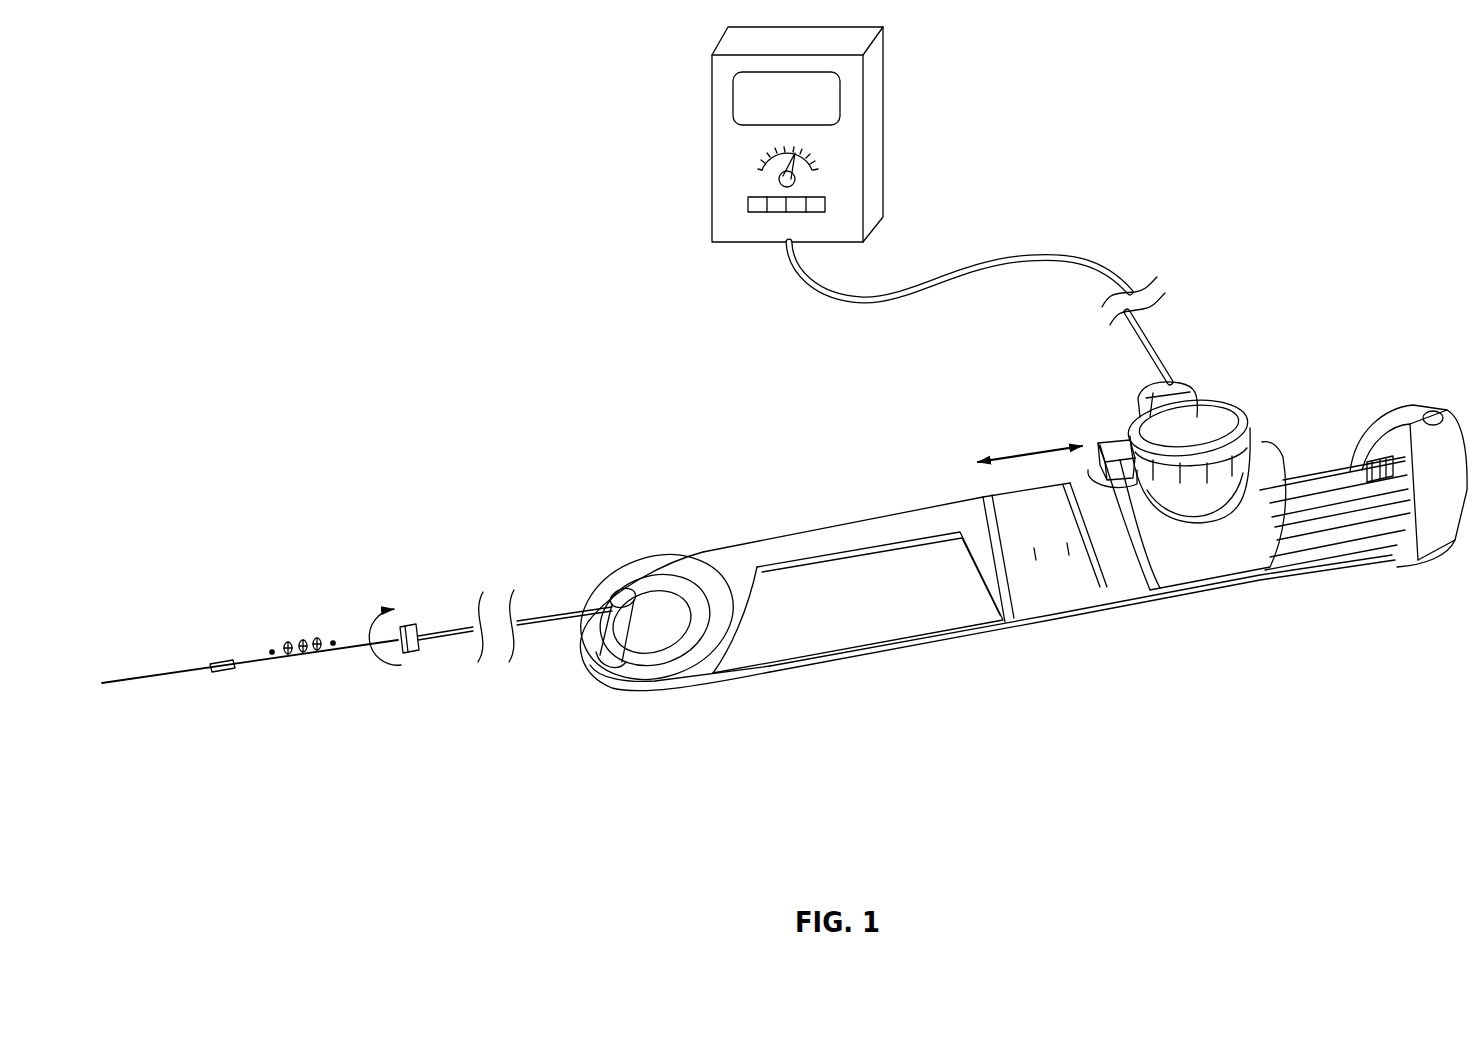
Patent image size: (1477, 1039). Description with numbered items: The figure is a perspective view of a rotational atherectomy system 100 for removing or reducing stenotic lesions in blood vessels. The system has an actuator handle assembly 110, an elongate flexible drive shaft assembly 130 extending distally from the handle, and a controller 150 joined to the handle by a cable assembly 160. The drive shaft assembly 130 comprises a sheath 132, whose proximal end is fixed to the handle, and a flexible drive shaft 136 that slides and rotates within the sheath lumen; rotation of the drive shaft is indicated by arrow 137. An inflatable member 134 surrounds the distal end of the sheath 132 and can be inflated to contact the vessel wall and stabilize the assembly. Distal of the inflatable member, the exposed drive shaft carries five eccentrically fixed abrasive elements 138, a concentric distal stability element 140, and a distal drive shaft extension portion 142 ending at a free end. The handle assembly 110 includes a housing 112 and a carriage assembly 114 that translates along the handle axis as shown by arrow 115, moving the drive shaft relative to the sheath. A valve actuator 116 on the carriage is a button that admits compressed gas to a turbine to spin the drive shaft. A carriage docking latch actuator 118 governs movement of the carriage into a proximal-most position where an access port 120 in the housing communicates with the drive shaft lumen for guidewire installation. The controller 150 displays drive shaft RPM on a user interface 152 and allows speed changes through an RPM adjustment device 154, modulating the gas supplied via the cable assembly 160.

The rotational atherectomy system 100 is at (412, 140).
The actuator handle assembly 110 is at (1015, 531).
The housing 112 is at (847, 664).
The carriage assembly 114 is at (1192, 545).
The arrow 115 is at (1018, 450).
The valve actuator 116 is at (1104, 440).
The carriage docking latch actuator 118 is at (1424, 410).
The access port 120 is at (1349, 472).
The elongate flexible drive shaft assembly 130 is at (361, 618).
The sheath 132 is at (519, 631).
The inflatable member 134 is at (413, 655).
The flexible drive shaft 136 is at (364, 648).
The arrow 137 is at (381, 620).
The abrasive elements 138 is at (337, 632).
The distal stability element 140 is at (222, 673).
The distal drive shaft extension portion 142 is at (205, 656).
The controller 150 is at (906, 89).
The user interface 152 is at (733, 95).
The RPM adjustment device 154 is at (779, 182).
The cable assembly 160 is at (988, 267).